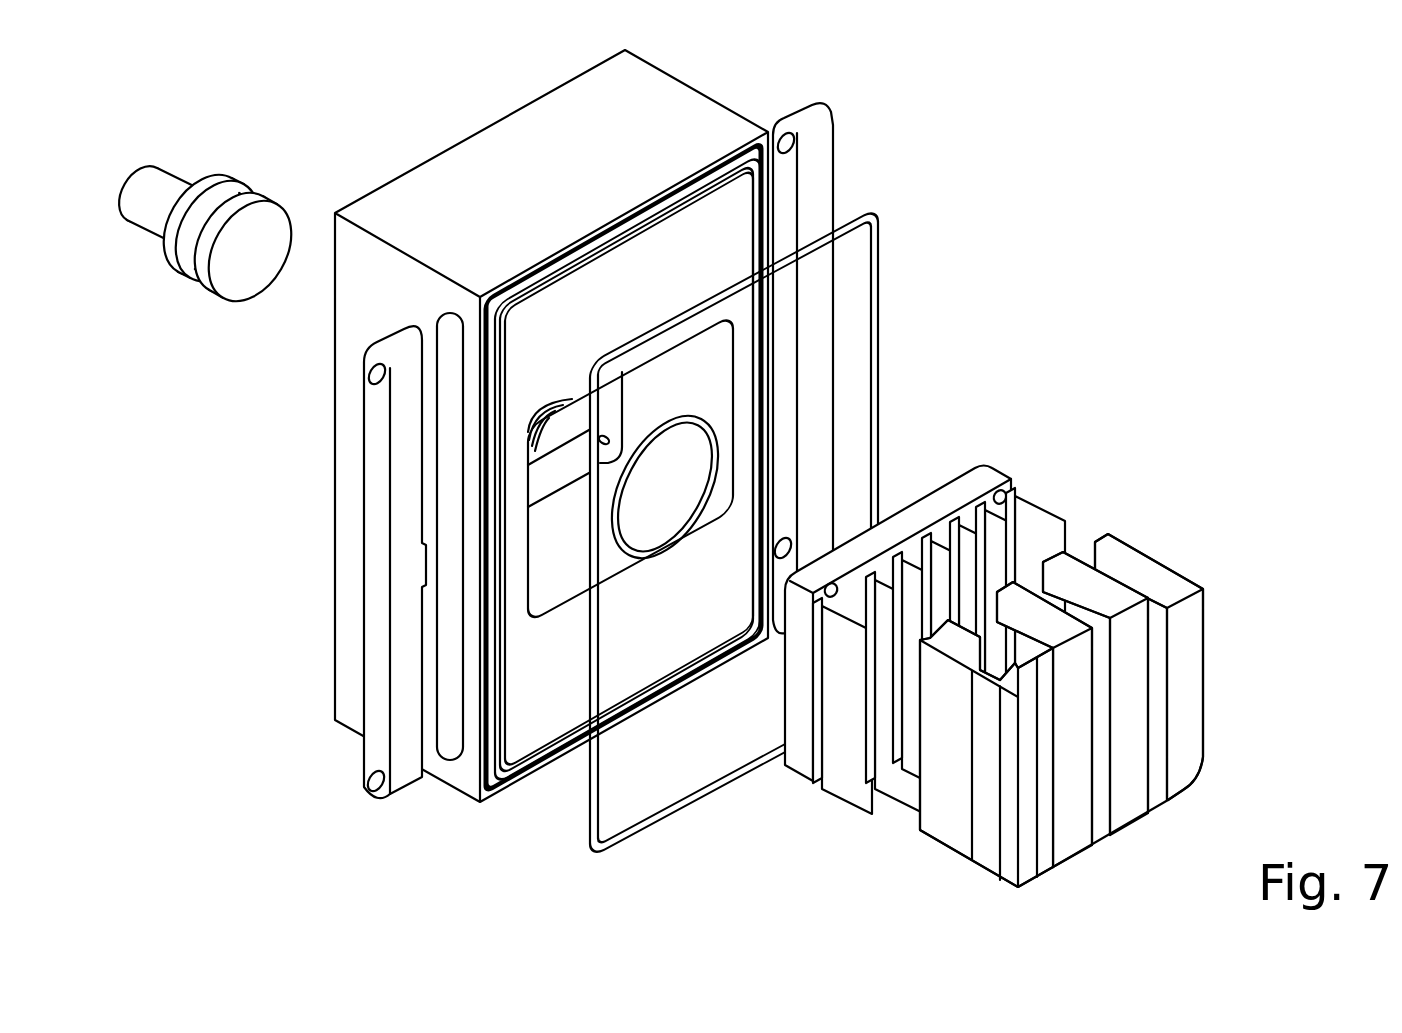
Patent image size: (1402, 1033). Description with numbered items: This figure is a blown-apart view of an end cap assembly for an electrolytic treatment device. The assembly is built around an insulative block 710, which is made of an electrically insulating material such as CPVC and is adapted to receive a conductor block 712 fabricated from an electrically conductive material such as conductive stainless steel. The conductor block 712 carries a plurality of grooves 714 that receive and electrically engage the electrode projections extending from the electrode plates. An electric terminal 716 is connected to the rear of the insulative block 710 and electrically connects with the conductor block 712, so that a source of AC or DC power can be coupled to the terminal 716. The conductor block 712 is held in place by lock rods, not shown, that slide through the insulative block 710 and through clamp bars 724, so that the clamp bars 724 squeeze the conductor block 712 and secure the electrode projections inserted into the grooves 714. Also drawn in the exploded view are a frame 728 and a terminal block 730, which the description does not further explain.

The insulative block 710 is at (643, 93).
The conductor block 712 is at (958, 483).
The grooves 714 is at (886, 808).
The electric terminal 716 is at (170, 288).
The clamp bars 724 is at (835, 158).
The gasket frame 728 is at (878, 297).
The terminal block 730 is at (1205, 687).